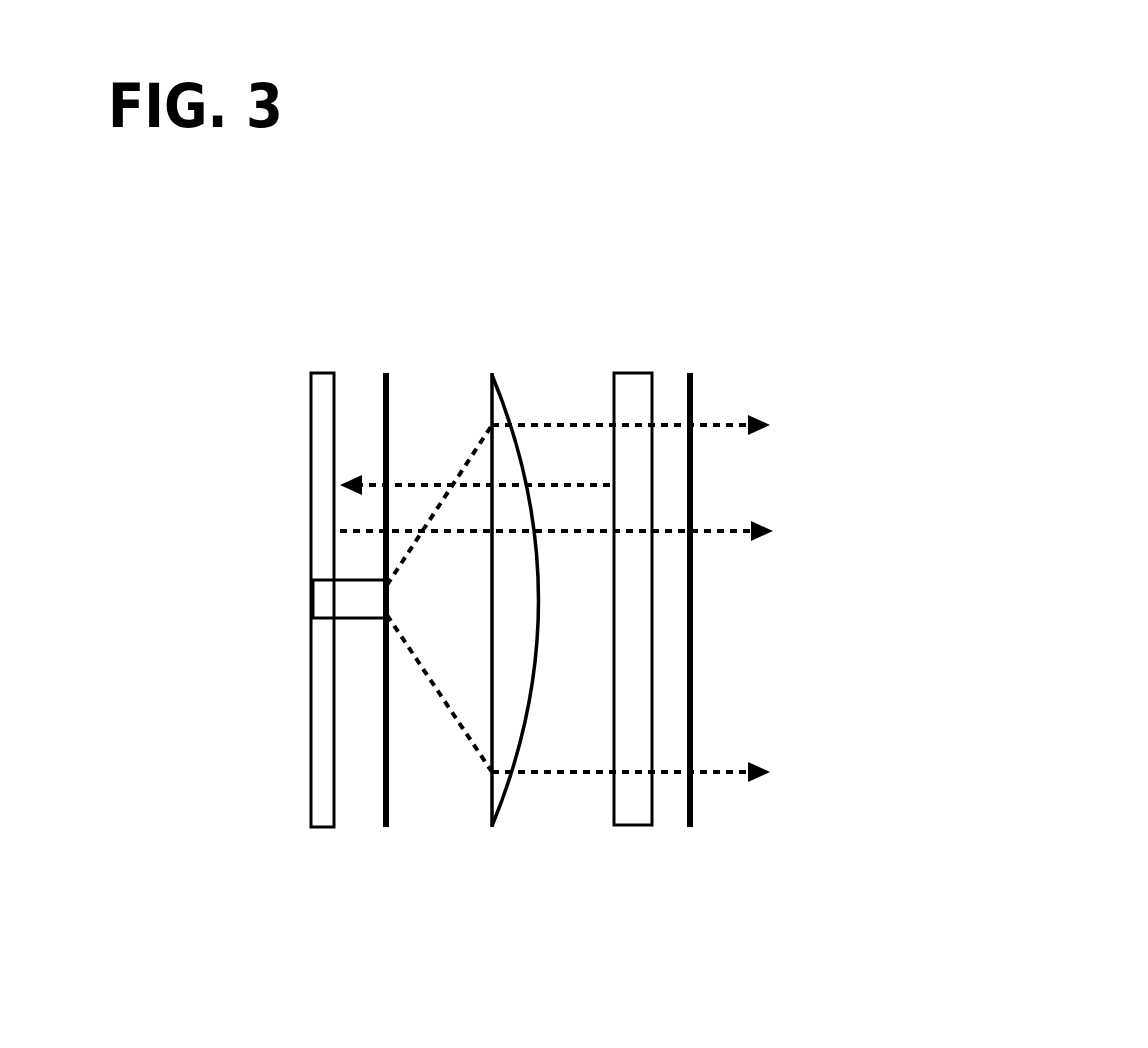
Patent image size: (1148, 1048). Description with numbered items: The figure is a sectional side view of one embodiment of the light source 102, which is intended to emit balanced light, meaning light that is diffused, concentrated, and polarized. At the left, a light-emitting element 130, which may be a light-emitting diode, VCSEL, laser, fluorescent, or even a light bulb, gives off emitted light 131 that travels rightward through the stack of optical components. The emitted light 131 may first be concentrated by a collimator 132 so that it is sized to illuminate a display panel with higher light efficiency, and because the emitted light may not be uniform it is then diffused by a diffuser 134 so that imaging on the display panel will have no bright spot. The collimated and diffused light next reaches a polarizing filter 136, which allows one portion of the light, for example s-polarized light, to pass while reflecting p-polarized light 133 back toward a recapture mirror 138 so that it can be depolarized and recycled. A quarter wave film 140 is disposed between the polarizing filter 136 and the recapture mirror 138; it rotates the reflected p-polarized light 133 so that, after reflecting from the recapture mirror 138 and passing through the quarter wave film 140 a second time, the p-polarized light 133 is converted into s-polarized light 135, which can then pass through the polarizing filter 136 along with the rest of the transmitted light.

The light source 102 is at (764, 143).
The light-emitting element 130 is at (327, 593).
The emitted light 131 is at (561, 425).
The collimator 132 is at (500, 790).
The p-polarized light 133 is at (425, 485).
The diffuser 134 is at (630, 812).
The s-polarized light 135 is at (714, 530).
The polarizing filter 136 is at (693, 803).
The recapture mirror 138 is at (323, 827).
The quarter wave film 140 is at (385, 375).